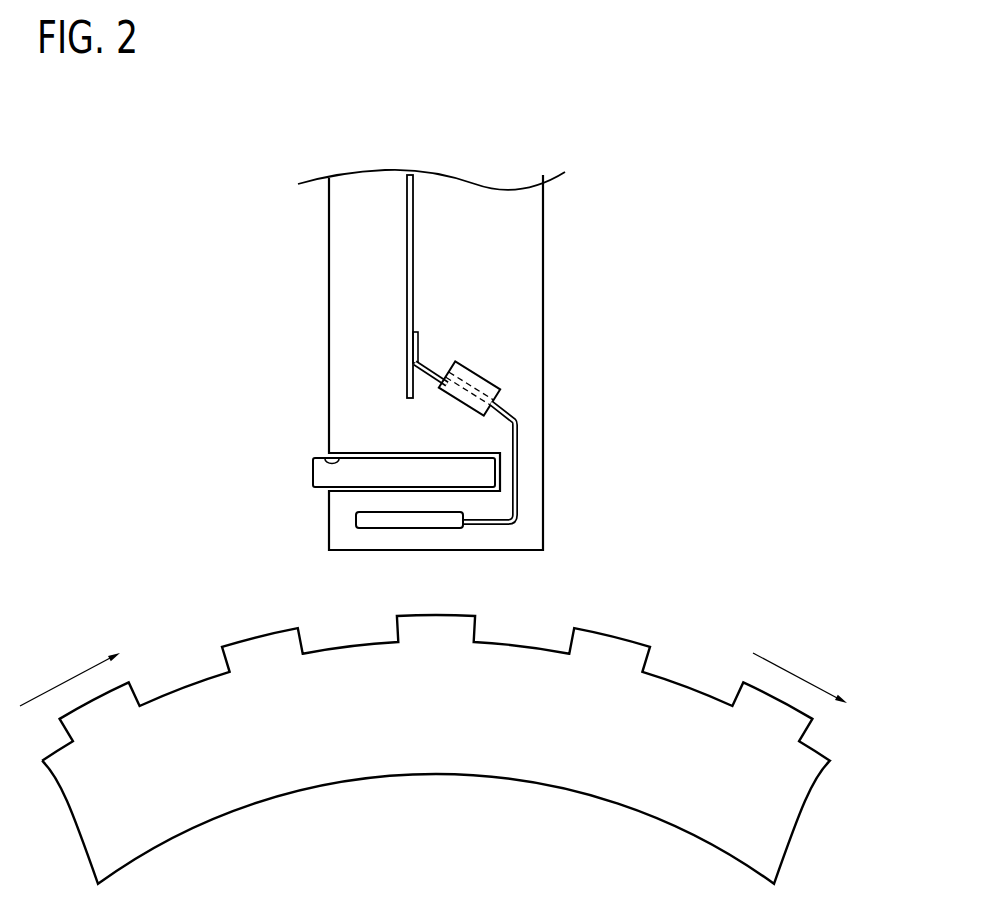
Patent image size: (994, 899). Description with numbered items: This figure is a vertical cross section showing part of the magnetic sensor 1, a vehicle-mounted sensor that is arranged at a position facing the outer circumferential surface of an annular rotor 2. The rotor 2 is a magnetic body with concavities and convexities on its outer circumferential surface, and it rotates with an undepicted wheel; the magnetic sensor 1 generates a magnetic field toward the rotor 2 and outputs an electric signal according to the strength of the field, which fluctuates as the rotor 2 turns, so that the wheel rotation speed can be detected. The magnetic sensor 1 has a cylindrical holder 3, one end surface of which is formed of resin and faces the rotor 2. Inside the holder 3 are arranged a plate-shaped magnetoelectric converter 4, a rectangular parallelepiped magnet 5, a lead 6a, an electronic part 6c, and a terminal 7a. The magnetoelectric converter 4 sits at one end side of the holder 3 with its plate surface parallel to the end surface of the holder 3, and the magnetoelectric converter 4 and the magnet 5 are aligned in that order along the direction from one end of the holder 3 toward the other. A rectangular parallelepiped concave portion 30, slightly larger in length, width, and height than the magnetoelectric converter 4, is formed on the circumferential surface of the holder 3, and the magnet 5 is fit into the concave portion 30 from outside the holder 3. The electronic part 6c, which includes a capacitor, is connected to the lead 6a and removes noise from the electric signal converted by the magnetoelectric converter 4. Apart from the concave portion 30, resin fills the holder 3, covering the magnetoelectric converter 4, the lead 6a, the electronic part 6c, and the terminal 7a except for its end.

The magnetic sensor 1 is at (624, 280).
The rotor 2 is at (613, 632).
The holder 3 is at (544, 415).
The magnetoelectric converter 4 is at (385, 522).
The magnet 5 is at (313, 470).
The lead 6a is at (518, 467).
The electronic part 6c is at (481, 375).
The terminal 7a is at (413, 249).
The concave portion 30 is at (326, 457).